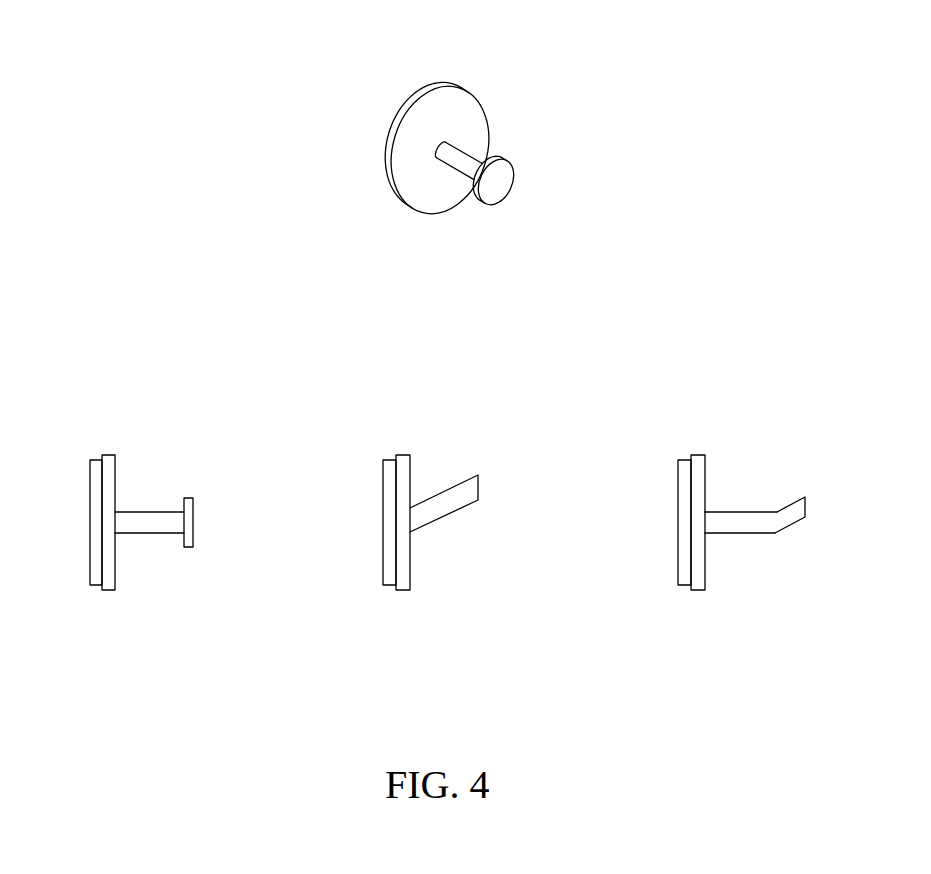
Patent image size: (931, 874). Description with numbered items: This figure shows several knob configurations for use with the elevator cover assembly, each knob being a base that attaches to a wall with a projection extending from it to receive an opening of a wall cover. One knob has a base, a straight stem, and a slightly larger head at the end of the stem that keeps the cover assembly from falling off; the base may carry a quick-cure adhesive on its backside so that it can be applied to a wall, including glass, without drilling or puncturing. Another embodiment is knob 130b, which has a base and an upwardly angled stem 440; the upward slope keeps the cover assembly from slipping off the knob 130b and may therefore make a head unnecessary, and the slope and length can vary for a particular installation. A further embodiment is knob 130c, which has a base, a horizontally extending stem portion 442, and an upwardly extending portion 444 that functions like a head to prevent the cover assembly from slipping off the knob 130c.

The knob 130b is at (450, 428).
The knob 130c is at (745, 428).
The upwardly angled stem 440 is at (452, 510).
The horizontally extending stem portion 442 is at (733, 523).
The upwardly extending portion 444 is at (807, 510).